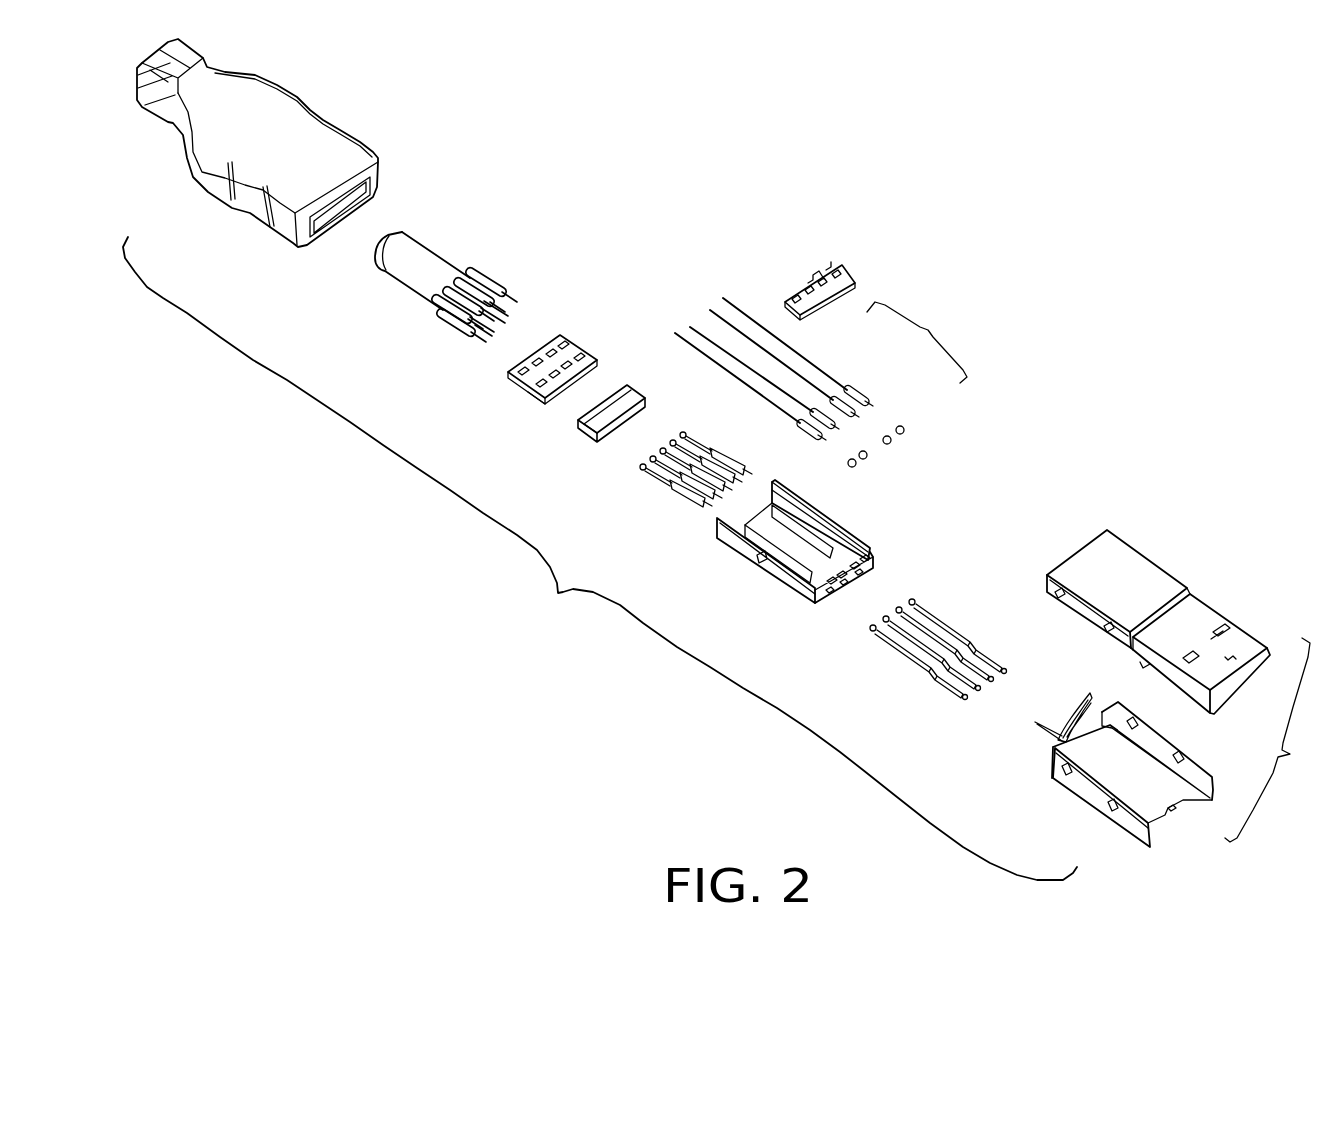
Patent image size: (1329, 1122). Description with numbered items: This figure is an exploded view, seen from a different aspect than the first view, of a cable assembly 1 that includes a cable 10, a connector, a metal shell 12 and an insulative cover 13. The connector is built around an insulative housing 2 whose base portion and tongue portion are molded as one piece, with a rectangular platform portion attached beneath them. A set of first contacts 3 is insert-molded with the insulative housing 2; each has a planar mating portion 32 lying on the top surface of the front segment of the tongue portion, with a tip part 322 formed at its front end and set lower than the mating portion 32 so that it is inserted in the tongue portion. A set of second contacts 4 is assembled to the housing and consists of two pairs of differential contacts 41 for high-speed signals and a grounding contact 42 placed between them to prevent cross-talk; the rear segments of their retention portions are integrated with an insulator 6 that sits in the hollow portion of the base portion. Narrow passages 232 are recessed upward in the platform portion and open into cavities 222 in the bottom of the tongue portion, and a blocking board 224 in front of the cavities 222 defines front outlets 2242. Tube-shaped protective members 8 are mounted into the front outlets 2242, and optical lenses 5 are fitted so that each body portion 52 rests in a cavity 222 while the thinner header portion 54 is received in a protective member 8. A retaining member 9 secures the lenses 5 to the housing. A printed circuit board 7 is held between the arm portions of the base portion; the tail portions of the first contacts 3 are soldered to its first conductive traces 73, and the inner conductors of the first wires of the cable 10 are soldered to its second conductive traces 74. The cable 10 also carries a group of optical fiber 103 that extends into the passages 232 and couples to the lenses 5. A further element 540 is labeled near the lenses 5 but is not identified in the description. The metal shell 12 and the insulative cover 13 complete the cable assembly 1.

The cable assembly 1 is at (600, 558).
The insulative housing 2 is at (831, 550).
The first contacts 3 is at (956, 659).
The second contacts 4 is at (689, 477).
The optical lenses 5 is at (882, 369).
The insulator 6 is at (582, 442).
The printed circuit board 7 is at (511, 395).
The protective members 8 is at (915, 425).
The retaining member 9 is at (858, 266).
The cable 10 is at (707, 348).
The metal shell 12 is at (1177, 688).
The insulative cover 13 is at (340, 110).
The mating portion 32 is at (985, 653).
The differential contacts 41 is at (714, 478).
The grounding contact 42 is at (735, 478).
The body portion 52 is at (866, 400).
The header portion 54 is at (868, 405).
The first conductive traces 73 is at (537, 388).
The second conductive traces 74 is at (510, 368).
The optical fiber 103 is at (745, 318).
The cavities 222 is at (853, 535).
The blocking board 224 is at (862, 566).
The narrow passages 232 is at (832, 517).
The tip part 322 is at (998, 668).
The terminal receiving portion 540 is at (854, 393).
The front outlets 2242 is at (858, 572).